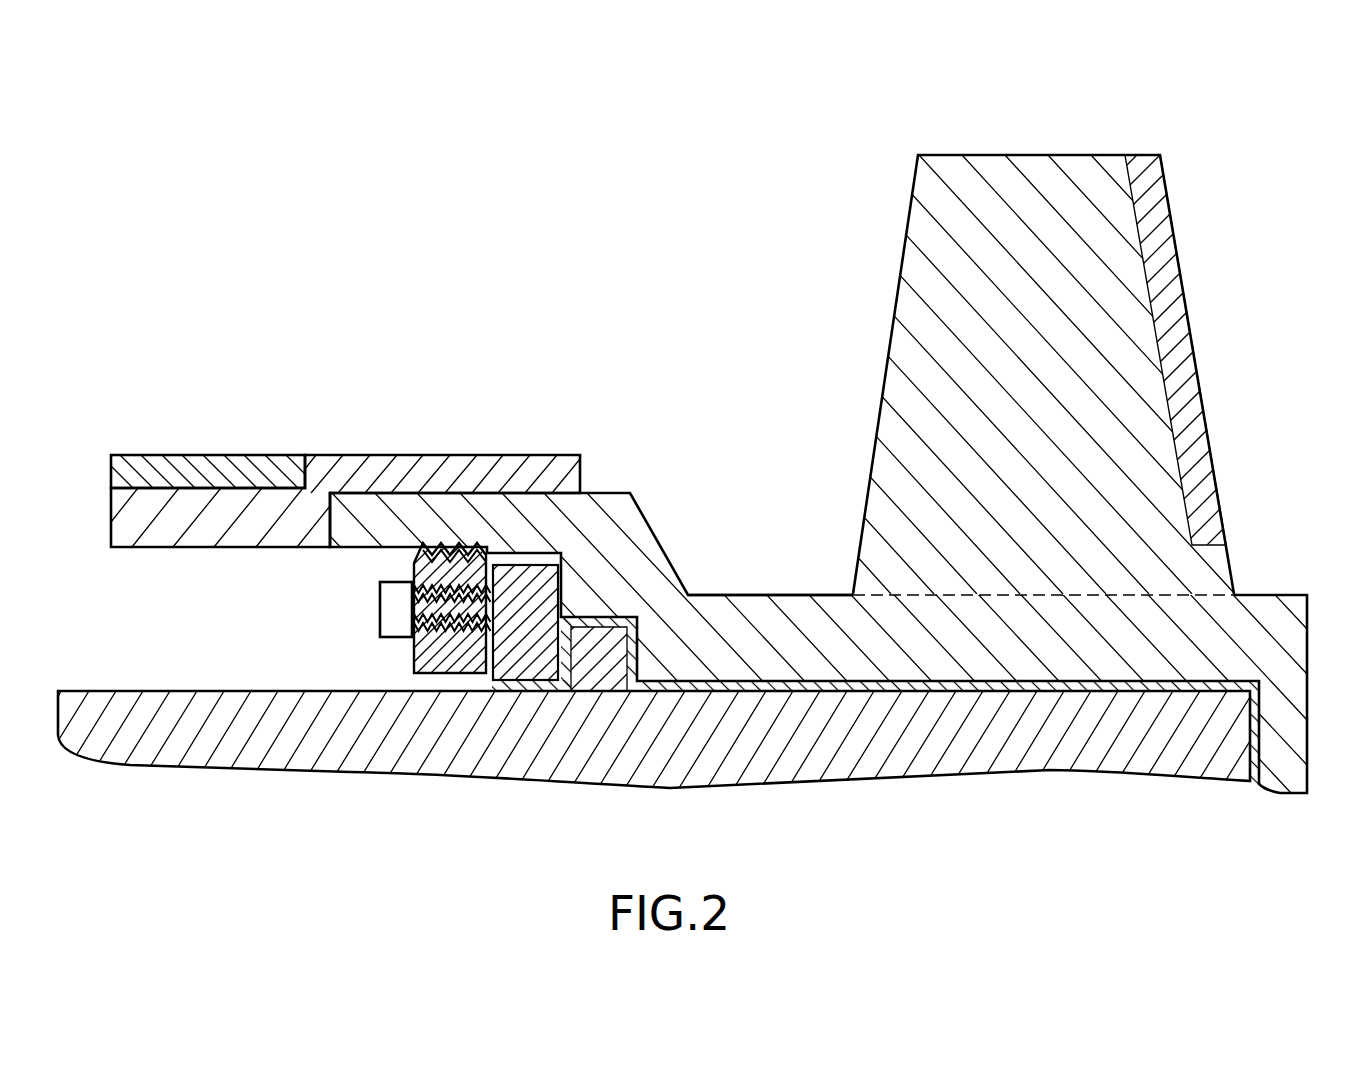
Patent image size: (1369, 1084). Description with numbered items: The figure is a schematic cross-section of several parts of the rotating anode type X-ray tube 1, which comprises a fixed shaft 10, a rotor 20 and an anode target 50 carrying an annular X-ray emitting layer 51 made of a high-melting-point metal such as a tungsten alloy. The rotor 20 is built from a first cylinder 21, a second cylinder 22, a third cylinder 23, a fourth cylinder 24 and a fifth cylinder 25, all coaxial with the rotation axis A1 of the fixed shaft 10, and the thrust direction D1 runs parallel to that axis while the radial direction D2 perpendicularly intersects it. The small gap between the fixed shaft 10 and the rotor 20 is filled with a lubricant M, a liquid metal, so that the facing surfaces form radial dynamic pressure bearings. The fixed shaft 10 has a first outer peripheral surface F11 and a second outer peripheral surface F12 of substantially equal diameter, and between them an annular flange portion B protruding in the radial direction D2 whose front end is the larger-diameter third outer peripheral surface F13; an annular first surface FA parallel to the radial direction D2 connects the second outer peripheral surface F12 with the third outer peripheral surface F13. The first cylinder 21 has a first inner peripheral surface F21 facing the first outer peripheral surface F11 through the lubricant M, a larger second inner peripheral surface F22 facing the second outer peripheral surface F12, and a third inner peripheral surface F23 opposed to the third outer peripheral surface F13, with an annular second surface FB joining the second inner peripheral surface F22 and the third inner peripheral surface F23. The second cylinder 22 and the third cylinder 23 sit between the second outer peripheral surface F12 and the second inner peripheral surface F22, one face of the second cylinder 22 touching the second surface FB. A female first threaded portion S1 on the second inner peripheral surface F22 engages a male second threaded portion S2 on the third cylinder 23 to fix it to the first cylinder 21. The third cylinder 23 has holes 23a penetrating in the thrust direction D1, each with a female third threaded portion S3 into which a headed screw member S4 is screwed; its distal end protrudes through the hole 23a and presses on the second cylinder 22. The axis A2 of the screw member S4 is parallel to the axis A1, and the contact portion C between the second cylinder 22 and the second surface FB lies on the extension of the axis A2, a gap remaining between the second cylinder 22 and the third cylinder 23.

The rotating anode type X-ray tube 1 is at (702, 452).
The fixed shaft 10 is at (1176, 766).
The rotor 20 is at (697, 353).
The first cylinder 21 is at (766, 607).
The second cylinder 22 is at (517, 570).
The third cylinder 23 is at (470, 543).
The hole 23a is at (410, 614).
The fourth cylinder 24 is at (320, 478).
The fifth cylinder 25 is at (195, 466).
The anode target 50 is at (1050, 157).
The X-ray emitting layer 51 is at (1173, 240).
The axis A1 is at (35, 749).
The axis A2 is at (575, 610).
The flange portion B is at (600, 665).
The contact portion C is at (576, 563).
The lubricant M is at (783, 692).
The thrust direction D1 is at (142, 205).
The radial direction D2 is at (163, 237).
The first threaded portion S1 is at (434, 545).
The second threaded portion S2 is at (410, 573).
The third threaded portion S3 is at (462, 630).
The screw member S4 is at (386, 626).
The first outer peripheral surface F11 is at (984, 684).
The second outer peripheral surface F12 is at (277, 682).
The third outer peripheral surface F13 is at (624, 610).
The first inner peripheral surface F21 is at (885, 692).
The second inner peripheral surface F22 is at (352, 562).
The third inner peripheral surface F23 is at (612, 634).
The first surface FA is at (559, 668).
The second surface FB is at (550, 588).